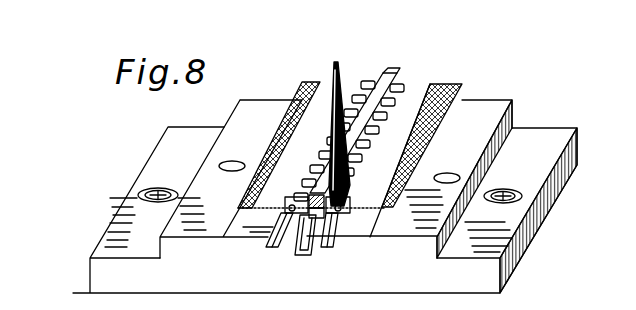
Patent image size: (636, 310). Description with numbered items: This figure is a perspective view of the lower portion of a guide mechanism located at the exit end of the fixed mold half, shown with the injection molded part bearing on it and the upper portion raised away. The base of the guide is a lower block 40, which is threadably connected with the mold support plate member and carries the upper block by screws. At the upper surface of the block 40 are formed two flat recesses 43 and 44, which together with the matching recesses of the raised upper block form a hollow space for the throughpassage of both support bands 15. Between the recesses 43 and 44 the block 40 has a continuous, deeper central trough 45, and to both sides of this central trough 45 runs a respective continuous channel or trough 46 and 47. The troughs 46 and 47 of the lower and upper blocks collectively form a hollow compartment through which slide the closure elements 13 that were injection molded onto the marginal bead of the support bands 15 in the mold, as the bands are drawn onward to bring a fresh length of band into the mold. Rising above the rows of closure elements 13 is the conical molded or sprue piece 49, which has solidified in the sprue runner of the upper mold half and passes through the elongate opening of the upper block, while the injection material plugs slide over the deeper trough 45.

The closure element 13 is at (413, 84).
The support band 15 is at (405, 122).
The lower block 40 is at (518, 238).
The flat recess 43 is at (228, 240).
The flat recess 44 is at (357, 240).
The central trough 45 is at (297, 256).
The trough 46 is at (268, 246).
The trough 47 is at (324, 246).
The conical sprue piece 49 is at (337, 69).